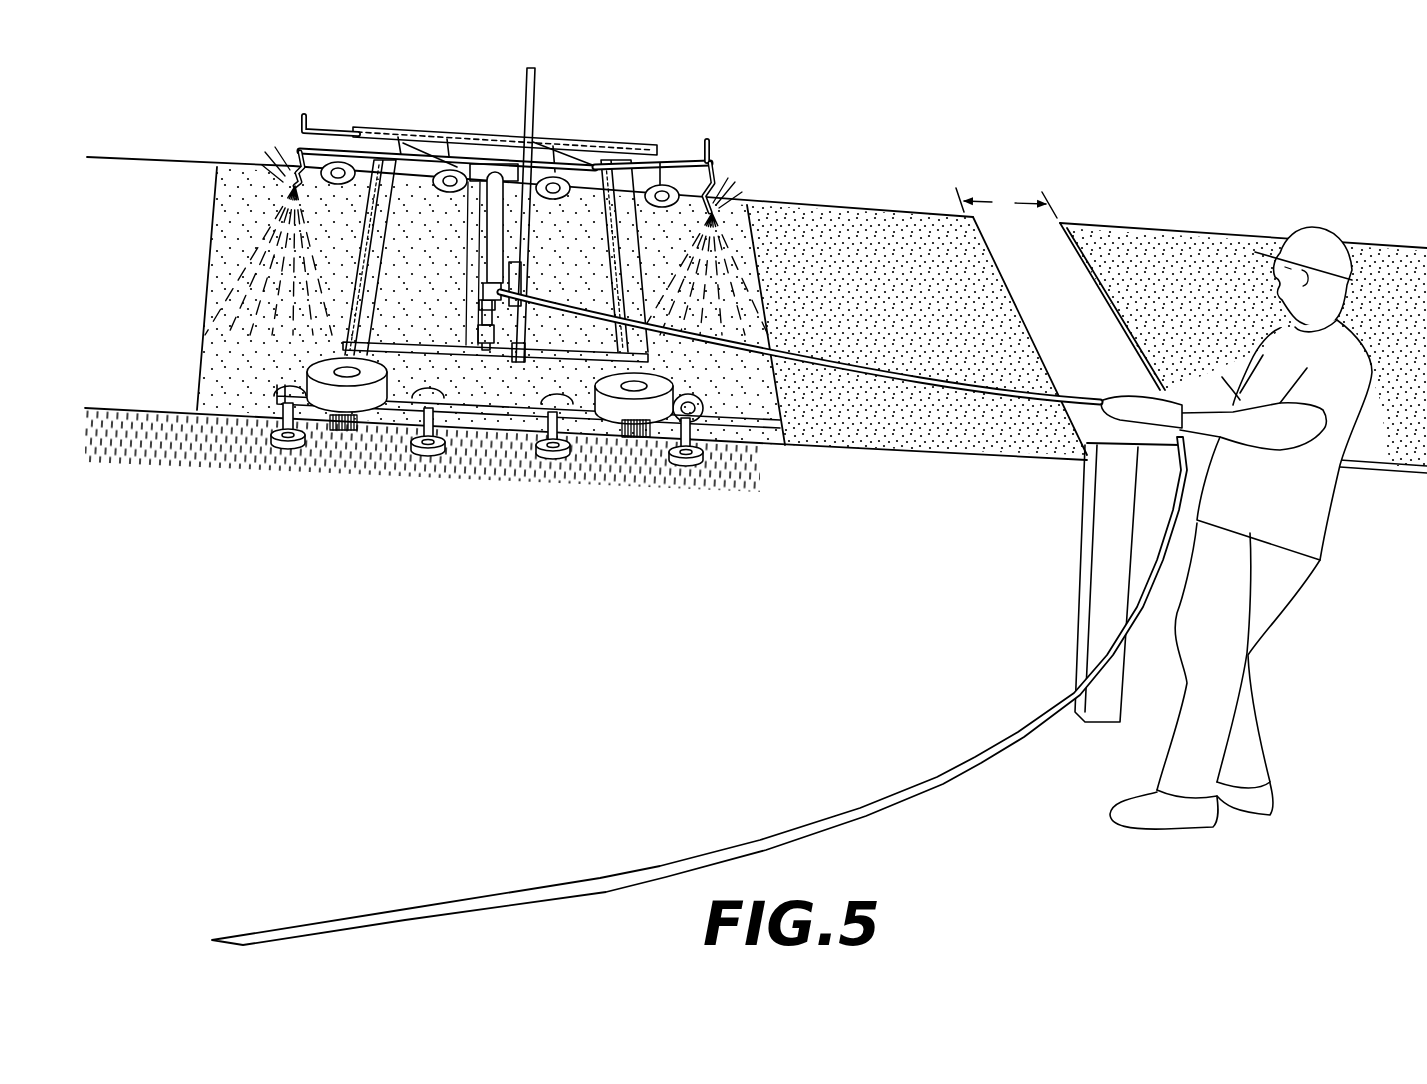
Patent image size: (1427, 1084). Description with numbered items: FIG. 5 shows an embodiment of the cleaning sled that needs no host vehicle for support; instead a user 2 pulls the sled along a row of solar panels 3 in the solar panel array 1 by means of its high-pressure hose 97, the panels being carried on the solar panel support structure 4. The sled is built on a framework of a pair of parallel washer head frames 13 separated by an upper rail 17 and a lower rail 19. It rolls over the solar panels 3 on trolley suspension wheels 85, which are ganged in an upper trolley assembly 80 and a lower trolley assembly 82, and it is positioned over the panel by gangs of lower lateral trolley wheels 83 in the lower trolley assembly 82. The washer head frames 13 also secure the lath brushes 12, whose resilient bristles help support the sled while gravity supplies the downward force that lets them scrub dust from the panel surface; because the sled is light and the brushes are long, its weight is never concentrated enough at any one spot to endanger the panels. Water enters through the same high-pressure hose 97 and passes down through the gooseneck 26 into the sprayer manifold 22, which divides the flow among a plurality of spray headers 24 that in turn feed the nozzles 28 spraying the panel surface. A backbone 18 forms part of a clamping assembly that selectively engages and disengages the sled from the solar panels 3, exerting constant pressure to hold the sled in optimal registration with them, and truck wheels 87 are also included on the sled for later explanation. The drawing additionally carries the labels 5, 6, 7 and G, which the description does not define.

The solar panel array 1 is at (931, 162).
The user 2 is at (1332, 240).
The solar panels 3 is at (750, 430).
The solar panel support structure 4 is at (1100, 532).
The spray 5 is at (275, 160).
The slab 6 is at (889, 313).
The cleaned slab 7 is at (137, 256).
The lath brushes 12 is at (345, 431).
The washer head frames 13 is at (388, 165).
The upper rail 17 is at (400, 127).
The backbone 18 is at (536, 92).
The lower rail 19 is at (447, 345).
The sprayer manifold 22 is at (497, 172).
The spray headers 24 is at (673, 152).
The gooseneck 26 is at (485, 292).
The nozzles 28 is at (294, 184).
The upper trolley assembly 80 is at (353, 128).
The lower trolley assembly 82 is at (472, 412).
The lower lateral trolley wheels 83 is at (286, 446).
The trolley suspension wheels 85 is at (562, 180).
The truck wheels 87 is at (325, 372).
The high-pressure hose 97 is at (932, 778).
The gap G is at (1006, 203).